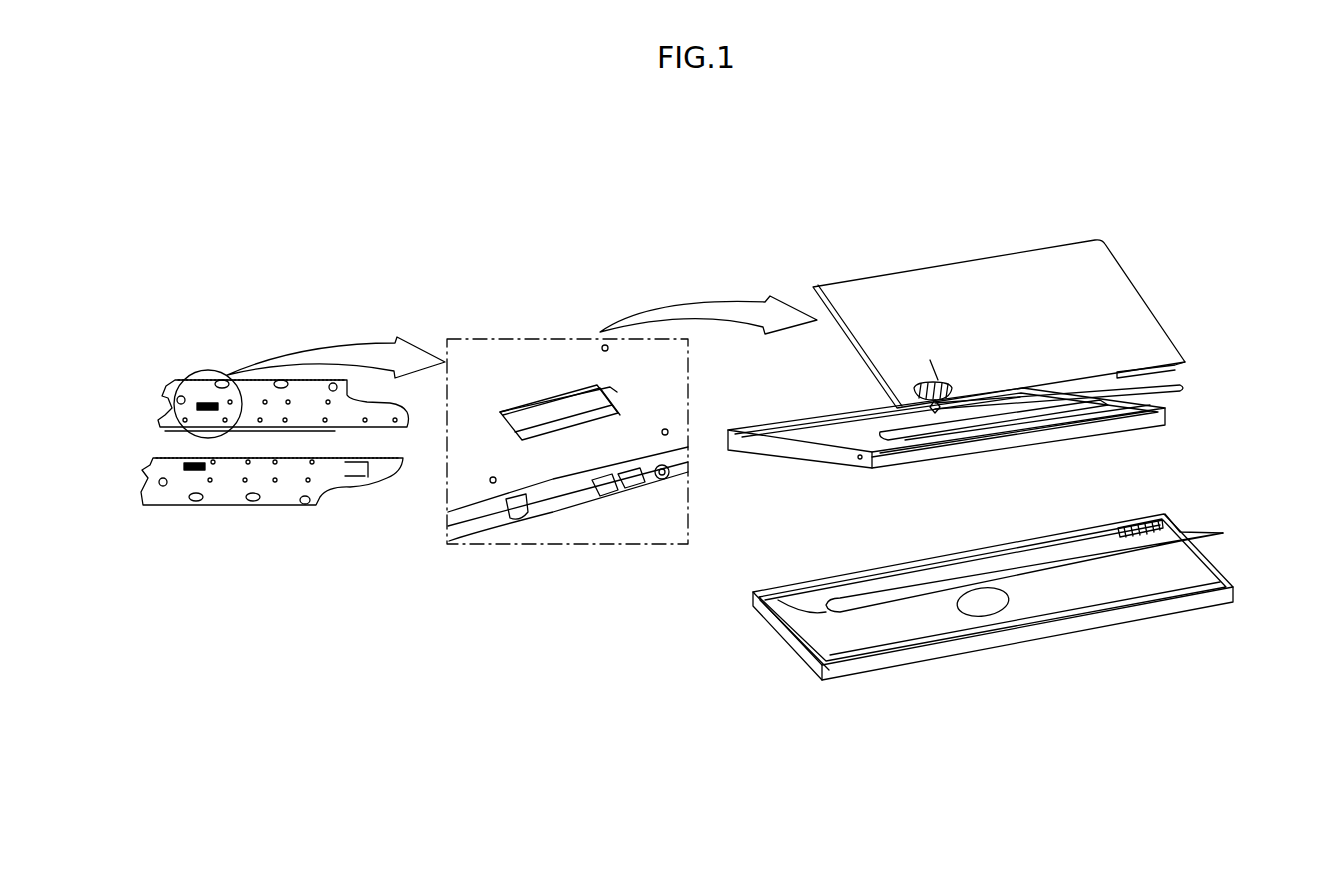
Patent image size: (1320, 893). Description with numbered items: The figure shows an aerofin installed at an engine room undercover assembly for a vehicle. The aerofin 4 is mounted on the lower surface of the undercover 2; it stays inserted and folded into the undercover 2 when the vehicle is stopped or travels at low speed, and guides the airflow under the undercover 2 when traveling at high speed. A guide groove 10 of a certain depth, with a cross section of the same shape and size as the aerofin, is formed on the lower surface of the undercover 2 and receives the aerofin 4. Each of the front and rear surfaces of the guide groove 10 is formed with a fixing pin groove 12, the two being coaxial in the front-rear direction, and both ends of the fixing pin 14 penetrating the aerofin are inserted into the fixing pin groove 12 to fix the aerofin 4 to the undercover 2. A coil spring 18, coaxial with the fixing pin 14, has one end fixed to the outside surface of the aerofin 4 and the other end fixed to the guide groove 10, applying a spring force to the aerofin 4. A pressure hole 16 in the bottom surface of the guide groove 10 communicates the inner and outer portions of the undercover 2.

The undercover 2 is at (306, 413).
The aerofin 4 is at (547, 410).
The guide groove 10 is at (835, 437).
The fixing pin groove 12 is at (858, 459).
The fixing pin 14 is at (1180, 390).
The pressure hole 16 is at (985, 605).
The coil spring 18 is at (928, 388).